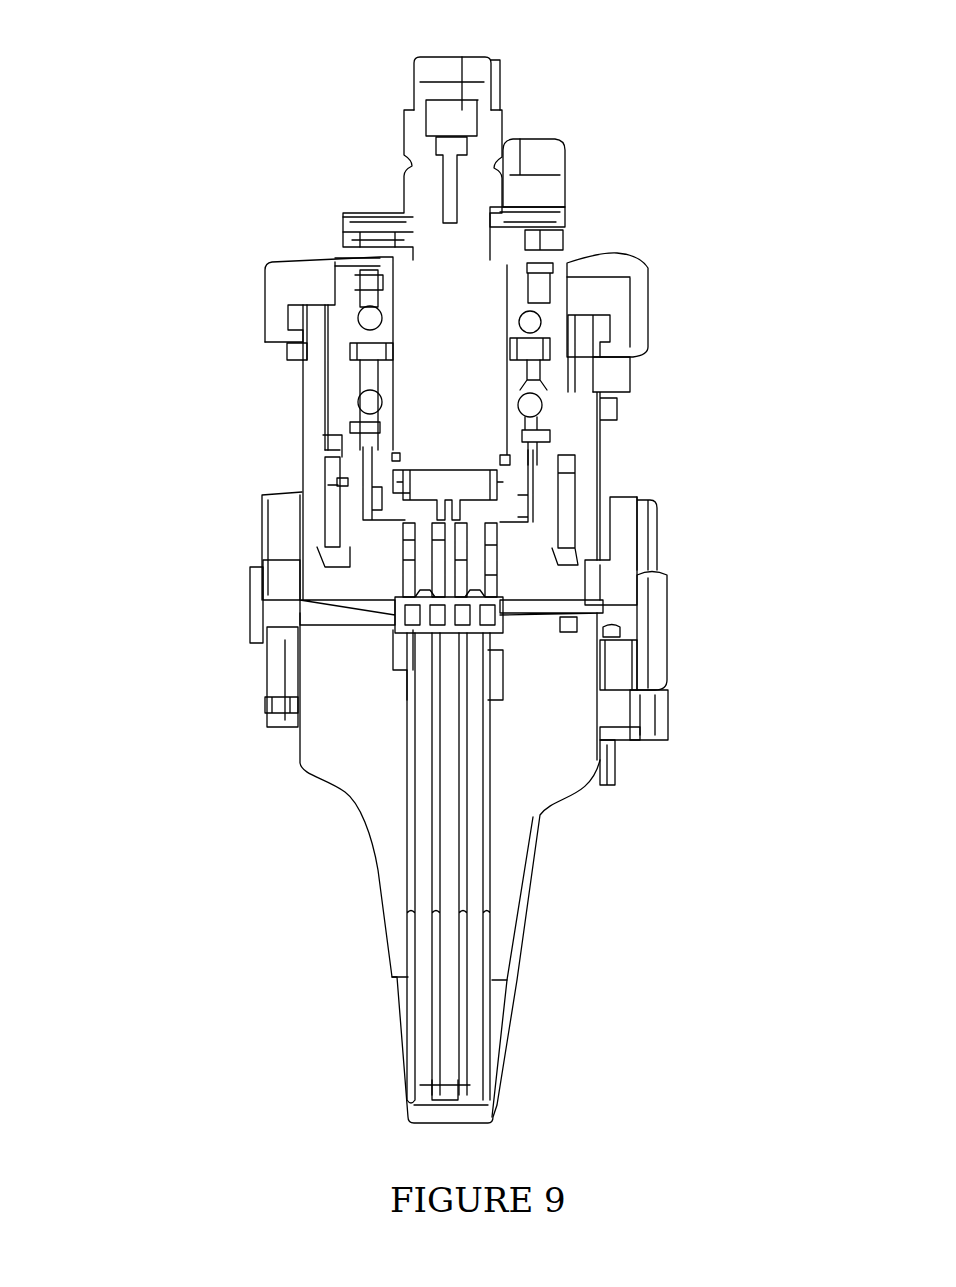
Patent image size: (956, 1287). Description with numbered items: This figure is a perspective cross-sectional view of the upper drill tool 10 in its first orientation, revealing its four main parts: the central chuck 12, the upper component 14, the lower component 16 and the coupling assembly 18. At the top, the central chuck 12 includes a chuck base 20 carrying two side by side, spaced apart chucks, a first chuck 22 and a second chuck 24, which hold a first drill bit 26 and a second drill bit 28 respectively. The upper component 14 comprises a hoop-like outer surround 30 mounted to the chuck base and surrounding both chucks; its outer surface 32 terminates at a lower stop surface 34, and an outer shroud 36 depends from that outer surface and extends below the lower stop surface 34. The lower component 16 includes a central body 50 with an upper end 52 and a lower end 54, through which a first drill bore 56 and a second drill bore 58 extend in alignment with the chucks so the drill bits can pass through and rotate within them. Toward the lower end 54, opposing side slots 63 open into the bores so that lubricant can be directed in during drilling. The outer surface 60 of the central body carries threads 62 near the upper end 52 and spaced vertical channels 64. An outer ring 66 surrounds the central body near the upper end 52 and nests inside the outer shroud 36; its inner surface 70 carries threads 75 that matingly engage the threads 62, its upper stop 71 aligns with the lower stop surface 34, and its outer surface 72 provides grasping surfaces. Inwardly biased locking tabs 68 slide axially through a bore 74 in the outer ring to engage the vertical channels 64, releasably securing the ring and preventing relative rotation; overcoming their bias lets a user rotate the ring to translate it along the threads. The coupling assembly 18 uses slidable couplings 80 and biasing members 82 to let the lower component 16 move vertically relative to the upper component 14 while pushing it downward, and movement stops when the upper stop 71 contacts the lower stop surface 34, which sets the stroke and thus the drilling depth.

The upper drill tool 10 is at (125, 462).
The central chuck 12 is at (752, 210).
The upper component 14 is at (125, 545).
The lower component 16 is at (210, 862).
The coupling assembly 18 is at (570, 620).
The chuck base 20 is at (508, 512).
The first chuck 22 is at (400, 610).
The second chuck 24 is at (495, 585).
The first drill bit 26 is at (407, 750).
The second drill bit 28 is at (480, 830).
The outer surround 30 is at (260, 545).
The outer surface 32 is at (268, 520).
The lower stop surface 34 is at (300, 600).
The outer shroud 36 is at (658, 612).
The central body 50 is at (558, 798).
The upper end 52 is at (328, 630).
The lower end 54 is at (507, 1110).
The first drill bore 56 is at (400, 865).
The second drill bore 58 is at (493, 928).
The outer surface 60 is at (527, 868).
The threads 62 is at (620, 625).
The side slots 63 is at (393, 997).
The vertical channels 64 is at (615, 755).
The outer ring 66 is at (663, 710).
The locking tab 68 is at (640, 727).
The inner surface 70 is at (280, 690).
The upper stop 71 is at (285, 620).
The outer surface 72 is at (268, 660).
The bore 74 is at (660, 705).
The threads 75 is at (603, 645).
The slidable coupling 80 is at (587, 603).
The biasing member 82 is at (571, 598).